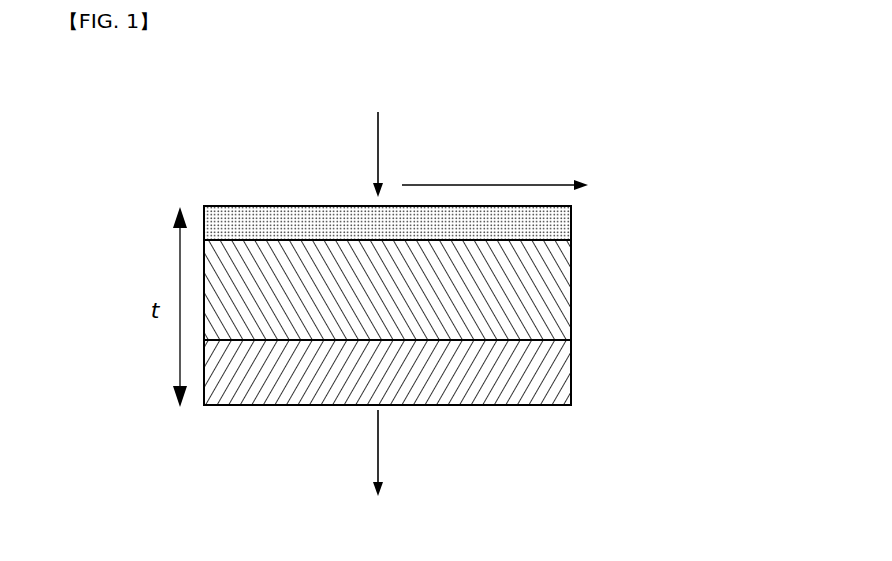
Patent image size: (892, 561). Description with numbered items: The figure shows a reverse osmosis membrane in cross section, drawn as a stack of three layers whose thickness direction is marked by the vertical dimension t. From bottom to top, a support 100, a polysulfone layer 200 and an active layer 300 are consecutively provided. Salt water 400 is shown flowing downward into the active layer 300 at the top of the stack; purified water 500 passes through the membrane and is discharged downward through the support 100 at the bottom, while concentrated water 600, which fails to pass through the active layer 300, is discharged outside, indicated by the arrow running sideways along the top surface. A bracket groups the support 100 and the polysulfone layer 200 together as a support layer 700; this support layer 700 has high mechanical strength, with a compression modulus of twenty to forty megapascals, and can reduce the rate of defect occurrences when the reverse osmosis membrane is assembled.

The support 100 is at (431, 365).
The polysulfone layer 200 is at (575, 305).
The active layer 300 is at (575, 220).
The salt water 400 is at (377, 135).
The purified water 500 is at (378, 471).
The concentrated water 600 is at (495, 164).
The support layer 700 is at (484, 322).